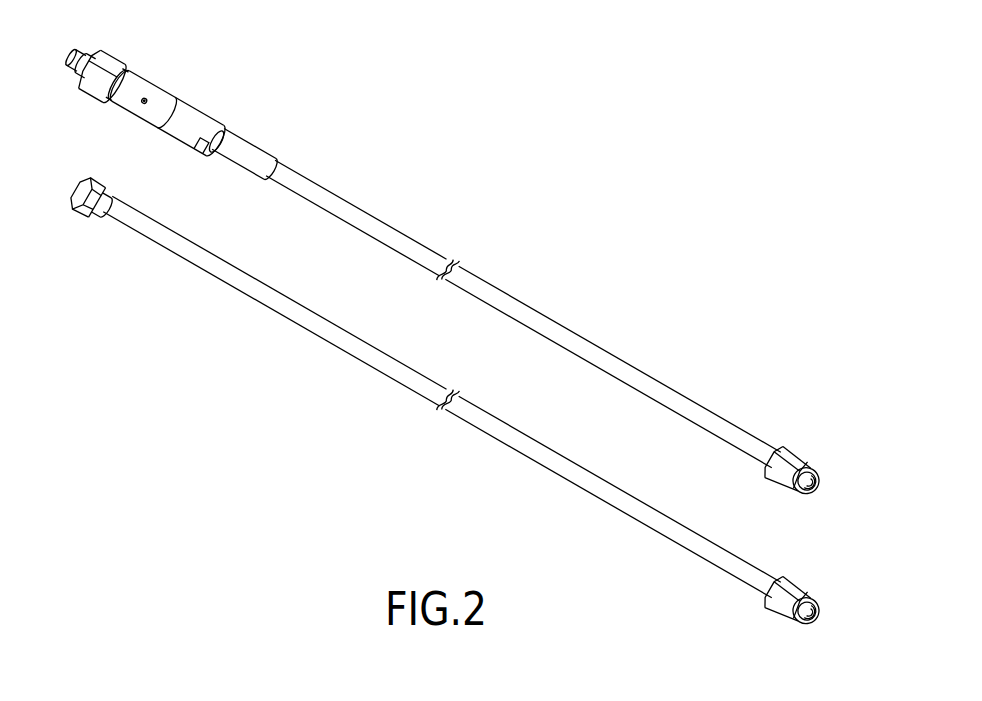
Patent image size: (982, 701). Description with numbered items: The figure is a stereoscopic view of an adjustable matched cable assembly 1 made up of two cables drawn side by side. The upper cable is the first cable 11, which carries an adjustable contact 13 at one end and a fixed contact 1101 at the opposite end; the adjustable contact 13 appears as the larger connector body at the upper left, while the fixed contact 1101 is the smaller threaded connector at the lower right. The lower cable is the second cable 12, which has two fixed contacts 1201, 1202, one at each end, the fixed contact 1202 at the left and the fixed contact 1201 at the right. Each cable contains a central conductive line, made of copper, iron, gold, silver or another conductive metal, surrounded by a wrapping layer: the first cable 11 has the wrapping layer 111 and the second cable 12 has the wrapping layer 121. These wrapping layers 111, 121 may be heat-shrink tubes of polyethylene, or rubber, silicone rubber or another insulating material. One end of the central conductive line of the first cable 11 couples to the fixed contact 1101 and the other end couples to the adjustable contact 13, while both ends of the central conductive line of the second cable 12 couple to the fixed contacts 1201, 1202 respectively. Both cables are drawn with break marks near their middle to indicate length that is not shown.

The adjustable matched cable assembly 1 is at (716, 68).
The first cable 11 is at (510, 283).
The wrapping layer 111 is at (655, 386).
The fixed contact 1101 is at (788, 455).
The second cable 12 is at (372, 383).
The wrapping layer 121 is at (705, 557).
The fixed contact 1201 is at (788, 586).
The fixed contact 1202 is at (85, 216).
The adjustable contact 13 is at (157, 80).